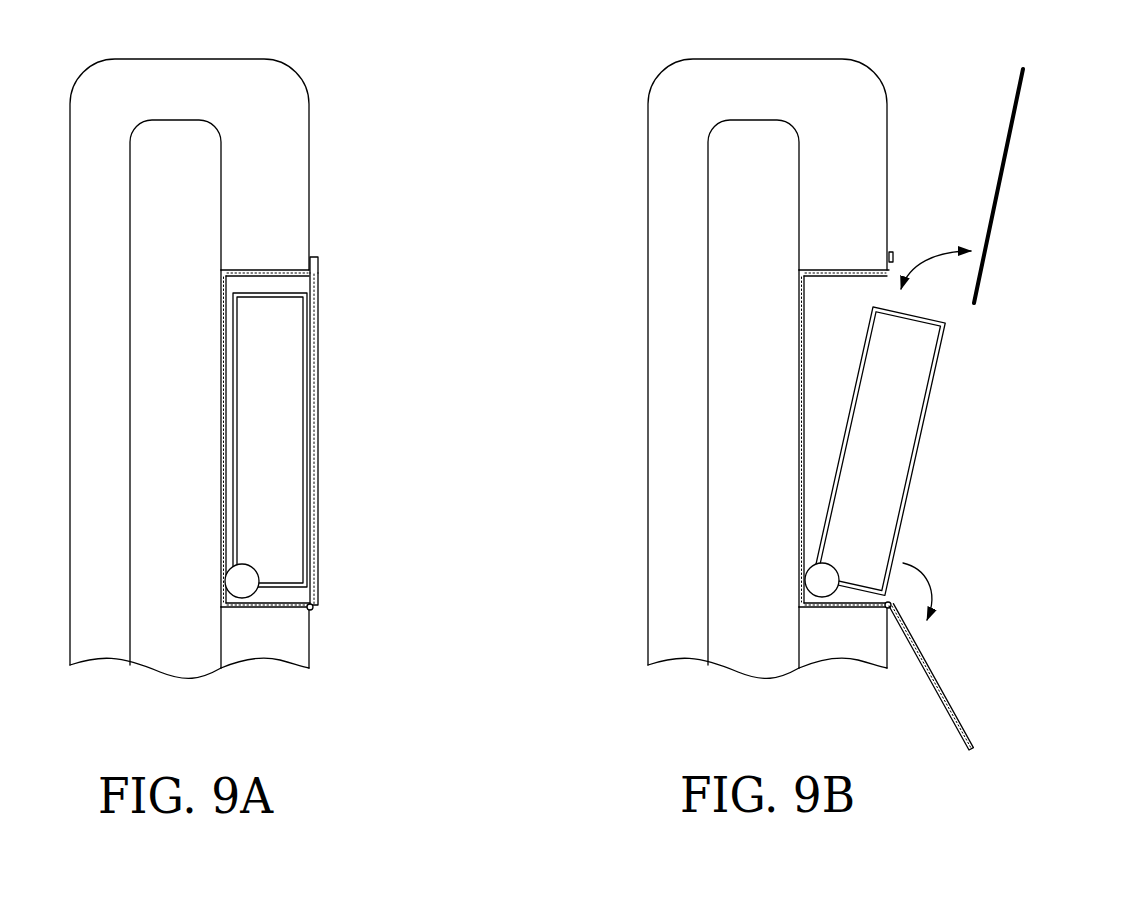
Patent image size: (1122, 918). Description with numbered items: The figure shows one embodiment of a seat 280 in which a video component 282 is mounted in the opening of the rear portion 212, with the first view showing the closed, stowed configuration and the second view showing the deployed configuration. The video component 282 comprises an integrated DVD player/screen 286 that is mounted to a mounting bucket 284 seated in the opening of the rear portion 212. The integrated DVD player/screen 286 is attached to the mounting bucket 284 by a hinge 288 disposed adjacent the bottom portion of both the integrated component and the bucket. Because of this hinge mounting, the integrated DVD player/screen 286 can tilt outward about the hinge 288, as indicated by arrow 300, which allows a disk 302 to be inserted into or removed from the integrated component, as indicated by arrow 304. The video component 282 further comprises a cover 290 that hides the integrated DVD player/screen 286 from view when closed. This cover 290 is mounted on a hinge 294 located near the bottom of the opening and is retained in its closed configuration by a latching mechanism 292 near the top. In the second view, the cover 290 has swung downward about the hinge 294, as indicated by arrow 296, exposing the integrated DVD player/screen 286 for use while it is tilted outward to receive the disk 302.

In FIG. 9A, the seat 280 is at (366, 110).
In FIG. 9B, the seat 280 is at (946, 110).
In FIG. 9A, the rear portion 212 is at (311, 192).
In FIG. 9B, the rear portion 212 is at (891, 192).
In FIG. 9A, the video component 282 is at (343, 376).
In FIG. 9A, the mounting bucket 284 is at (252, 270).
In FIG. 9A, the integrated DVD player/screen 286 is at (260, 377).
In FIG. 9A, the hinge 288 is at (242, 583).
In FIG. 9B, the hinge 288 is at (822, 583).
In FIG. 9A, the cover 290 is at (318, 474).
In FIG. 9B, the cover 290 is at (942, 683).
In FIG. 9A, the latching mechanism 292 is at (311, 257).
In FIG. 9A, the hinge 294 is at (313, 609).
In FIG. 9B, the hinge 294 is at (886, 608).
In FIG. 9B, the arrow 296 is at (933, 578).
In FIG. 9B, the arrow 300 is at (852, 374).
In FIG. 9B, the disk 302 is at (996, 222).
In FIG. 9B, the arrow 304 is at (920, 263).